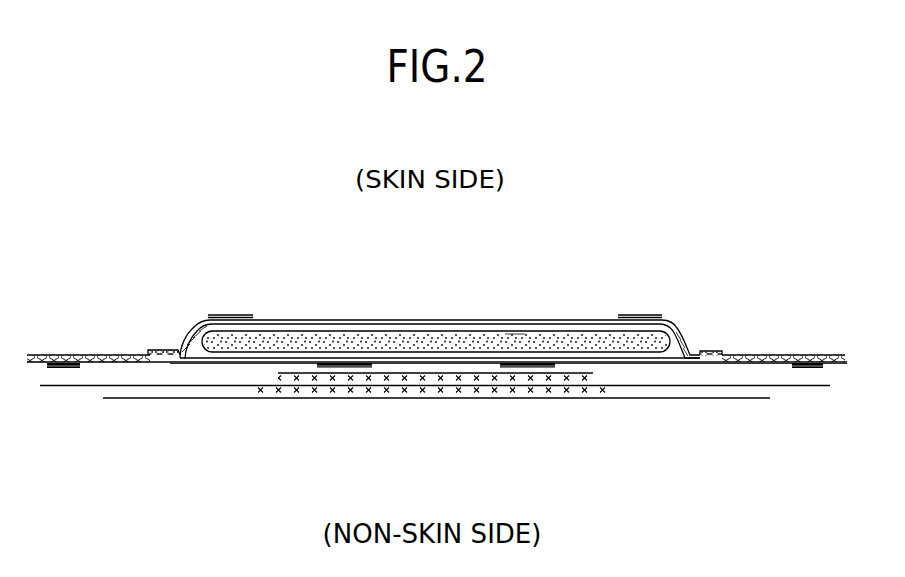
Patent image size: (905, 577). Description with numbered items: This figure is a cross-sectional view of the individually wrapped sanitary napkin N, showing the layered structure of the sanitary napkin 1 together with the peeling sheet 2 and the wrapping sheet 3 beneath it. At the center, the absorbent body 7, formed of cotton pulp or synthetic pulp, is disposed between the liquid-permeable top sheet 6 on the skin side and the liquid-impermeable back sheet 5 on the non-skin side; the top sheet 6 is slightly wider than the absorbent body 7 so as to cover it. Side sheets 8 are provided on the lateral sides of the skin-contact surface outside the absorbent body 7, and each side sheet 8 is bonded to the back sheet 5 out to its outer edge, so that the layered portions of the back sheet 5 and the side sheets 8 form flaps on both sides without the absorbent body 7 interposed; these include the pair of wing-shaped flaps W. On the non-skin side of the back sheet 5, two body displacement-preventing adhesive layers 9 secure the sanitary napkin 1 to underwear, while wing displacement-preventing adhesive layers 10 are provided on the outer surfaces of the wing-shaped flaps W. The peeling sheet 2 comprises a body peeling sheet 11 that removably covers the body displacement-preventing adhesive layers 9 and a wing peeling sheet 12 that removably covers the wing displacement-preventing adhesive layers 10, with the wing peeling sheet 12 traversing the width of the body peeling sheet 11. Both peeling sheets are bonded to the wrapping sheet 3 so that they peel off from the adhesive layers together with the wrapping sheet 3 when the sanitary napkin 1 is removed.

The individually wrapped sanitary napkin N is at (674, 230).
The sanitary napkin 1 is at (686, 312).
The peeling sheet 2 is at (445, 400).
The wrapping sheet 3 is at (160, 412).
The back sheet 5 is at (633, 366).
The top sheet 6 is at (360, 322).
The absorbent body 7 is at (515, 335).
The side sheet 8 is at (235, 316).
The body displacement-preventing adhesive layer 9 is at (343, 368).
The wing displacement-preventing adhesive layer 10 is at (70, 368).
The body peeling sheet 11 is at (283, 375).
The wing peeling sheet 12 is at (225, 387).
The wing-shaped flap W is at (57, 346).